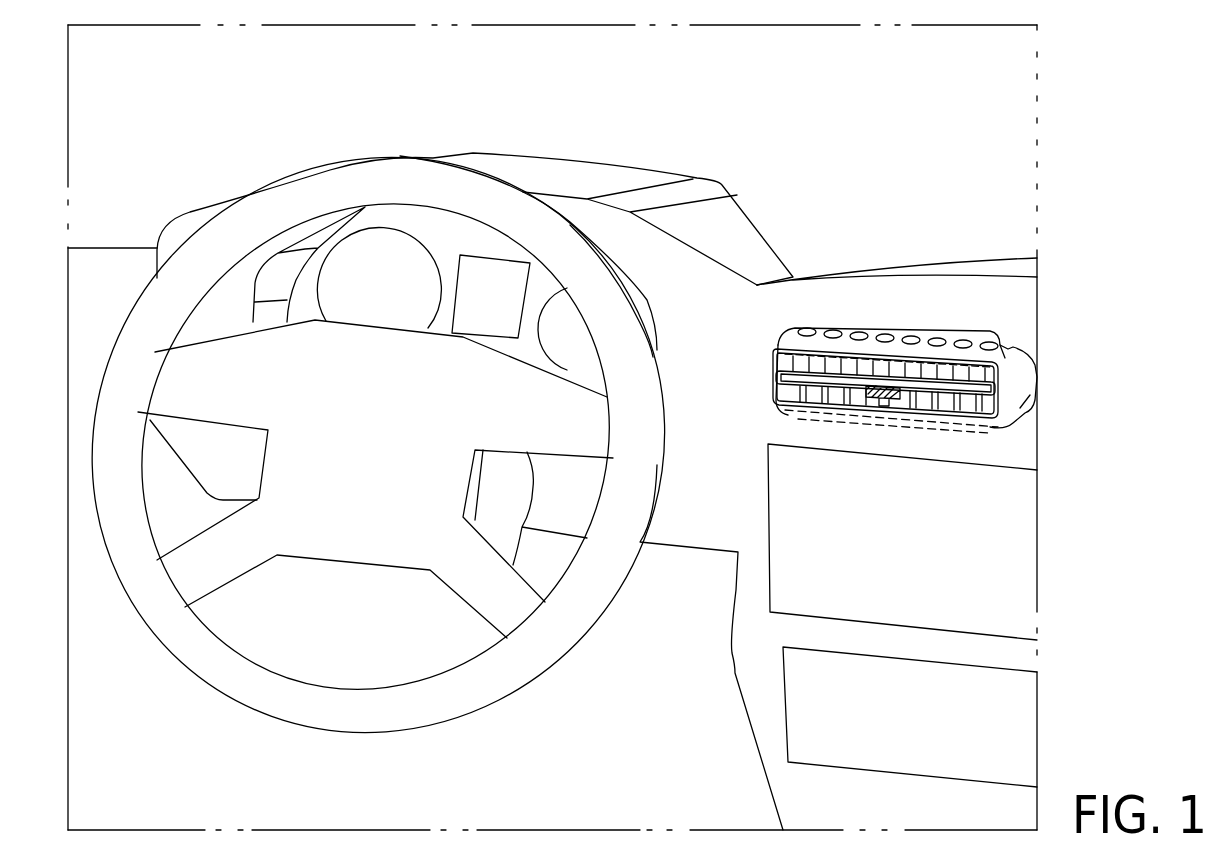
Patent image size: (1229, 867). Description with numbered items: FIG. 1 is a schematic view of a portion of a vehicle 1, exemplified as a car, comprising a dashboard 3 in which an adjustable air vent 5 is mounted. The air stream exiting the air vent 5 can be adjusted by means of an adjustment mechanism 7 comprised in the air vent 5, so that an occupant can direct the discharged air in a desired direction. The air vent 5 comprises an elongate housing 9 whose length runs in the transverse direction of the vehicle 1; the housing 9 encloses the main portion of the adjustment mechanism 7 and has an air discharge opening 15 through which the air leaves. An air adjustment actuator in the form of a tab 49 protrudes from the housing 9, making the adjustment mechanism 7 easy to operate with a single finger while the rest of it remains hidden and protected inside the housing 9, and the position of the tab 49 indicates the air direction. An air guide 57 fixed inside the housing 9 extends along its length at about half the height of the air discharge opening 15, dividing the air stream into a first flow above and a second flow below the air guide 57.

The vehicle 1 is at (717, 111).
The dashboard 3 is at (950, 318).
The adjustable air vent 5 is at (943, 328).
The adjustment mechanism 7 is at (997, 378).
The housing 9 is at (1020, 365).
The air discharge opening 15 is at (948, 407).
The tab 49 is at (880, 400).
The air guide 57 is at (1000, 410).